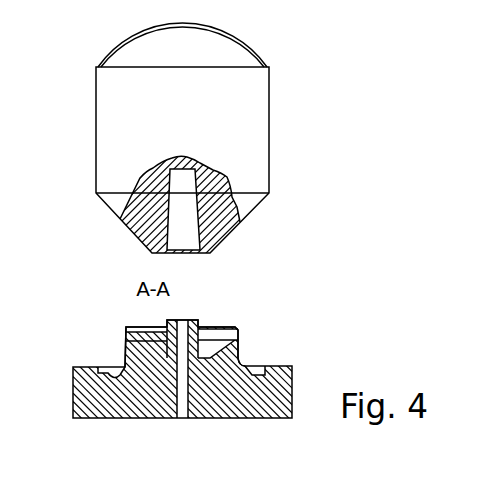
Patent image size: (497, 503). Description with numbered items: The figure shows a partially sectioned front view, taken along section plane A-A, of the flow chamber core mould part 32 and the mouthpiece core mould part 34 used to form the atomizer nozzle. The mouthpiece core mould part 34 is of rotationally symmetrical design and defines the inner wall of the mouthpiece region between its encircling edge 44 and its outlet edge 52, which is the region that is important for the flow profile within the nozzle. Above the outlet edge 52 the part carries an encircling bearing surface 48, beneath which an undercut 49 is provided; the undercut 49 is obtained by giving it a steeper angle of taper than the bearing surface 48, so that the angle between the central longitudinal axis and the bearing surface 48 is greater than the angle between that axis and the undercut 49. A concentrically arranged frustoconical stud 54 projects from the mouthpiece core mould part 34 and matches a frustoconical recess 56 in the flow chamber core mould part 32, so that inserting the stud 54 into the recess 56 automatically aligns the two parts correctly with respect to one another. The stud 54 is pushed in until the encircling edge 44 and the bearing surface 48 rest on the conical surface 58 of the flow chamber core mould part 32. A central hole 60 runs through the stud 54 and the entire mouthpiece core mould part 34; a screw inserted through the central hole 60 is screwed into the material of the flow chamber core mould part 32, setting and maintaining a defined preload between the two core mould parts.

The flow chamber core mould part 32 is at (169, 110).
The conical surface 58 is at (120, 220).
The frustoconical recess 56 is at (200, 227).
The mouthpiece core mould part 34 is at (80, 370).
The outlet edge 52 is at (107, 370).
The encircling edge 44 is at (127, 328).
The stud 54 is at (195, 323).
The central hole 60 is at (188, 410).
The undercut 49 is at (210, 335).
The bearing surface 48 is at (227, 330).